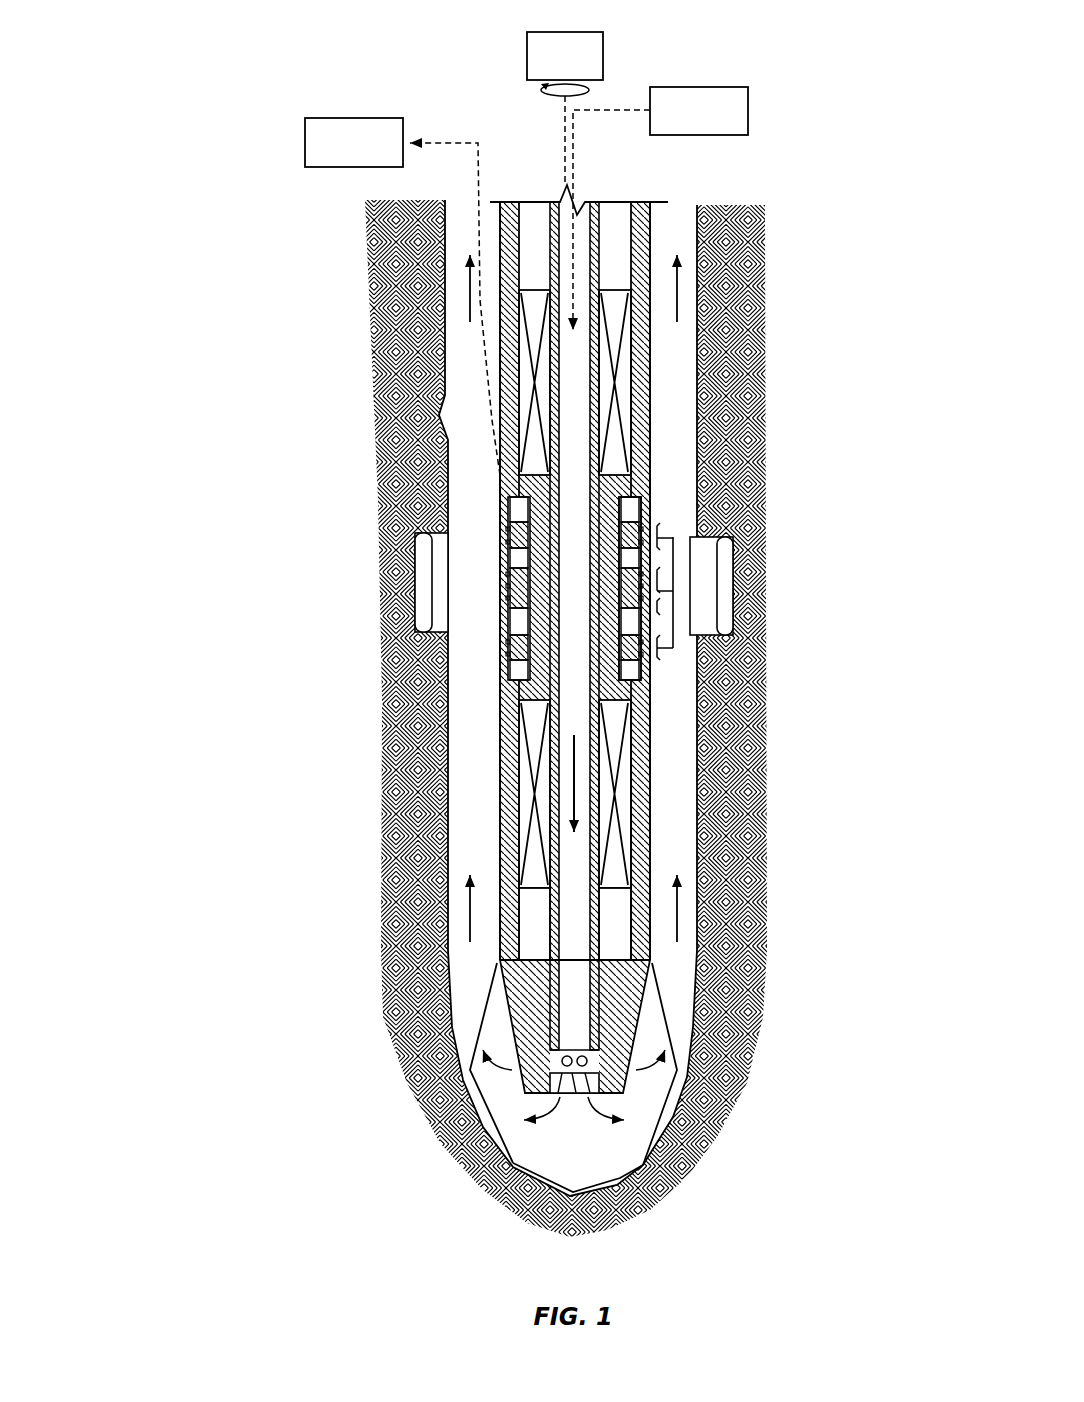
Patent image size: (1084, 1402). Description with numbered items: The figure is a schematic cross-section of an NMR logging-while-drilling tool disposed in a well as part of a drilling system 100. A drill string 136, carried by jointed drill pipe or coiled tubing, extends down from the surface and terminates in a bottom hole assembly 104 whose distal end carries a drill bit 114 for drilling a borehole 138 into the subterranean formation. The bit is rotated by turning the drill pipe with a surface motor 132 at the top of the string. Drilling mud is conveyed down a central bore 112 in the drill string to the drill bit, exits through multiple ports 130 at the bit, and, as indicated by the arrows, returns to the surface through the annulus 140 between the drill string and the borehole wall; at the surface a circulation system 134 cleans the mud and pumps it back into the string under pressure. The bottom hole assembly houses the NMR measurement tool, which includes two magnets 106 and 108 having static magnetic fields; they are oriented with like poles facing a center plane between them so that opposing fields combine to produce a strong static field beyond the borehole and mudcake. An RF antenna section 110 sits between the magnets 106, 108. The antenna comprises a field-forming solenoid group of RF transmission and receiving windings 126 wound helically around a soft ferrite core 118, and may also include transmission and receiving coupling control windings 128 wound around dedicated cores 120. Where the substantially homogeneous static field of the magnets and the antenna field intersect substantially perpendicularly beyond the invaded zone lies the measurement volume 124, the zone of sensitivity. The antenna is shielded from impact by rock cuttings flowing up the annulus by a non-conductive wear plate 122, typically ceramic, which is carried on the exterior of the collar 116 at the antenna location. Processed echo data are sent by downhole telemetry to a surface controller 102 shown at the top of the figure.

The drilling system 100 is at (336, 930).
The surface controller 102 is at (358, 117).
The bottom hole assembly 104 is at (465, 393).
The magnet 106 is at (615, 325).
The magnet 108 is at (615, 866).
The RF antenna section 110 is at (673, 538).
The central bore 112 is at (577, 726).
The drill bit 114 is at (627, 1157).
The drill collar 116 is at (632, 385).
The core 118 is at (508, 603).
The dedicated core 120 is at (510, 497).
The non-conductive wear plate 122 is at (643, 507).
The measurement volume 124 is at (738, 587).
The RF transmission and receiving windings 126 is at (505, 590).
The transmission and receiving coupling control windings 128 is at (505, 532).
The ports 130 is at (537, 1067).
The surface motor 132 is at (606, 52).
The circulation system 134 is at (749, 110).
The drill string 136 is at (535, 192).
The borehole 138 is at (467, 1022).
The annulus 140 is at (475, 830).